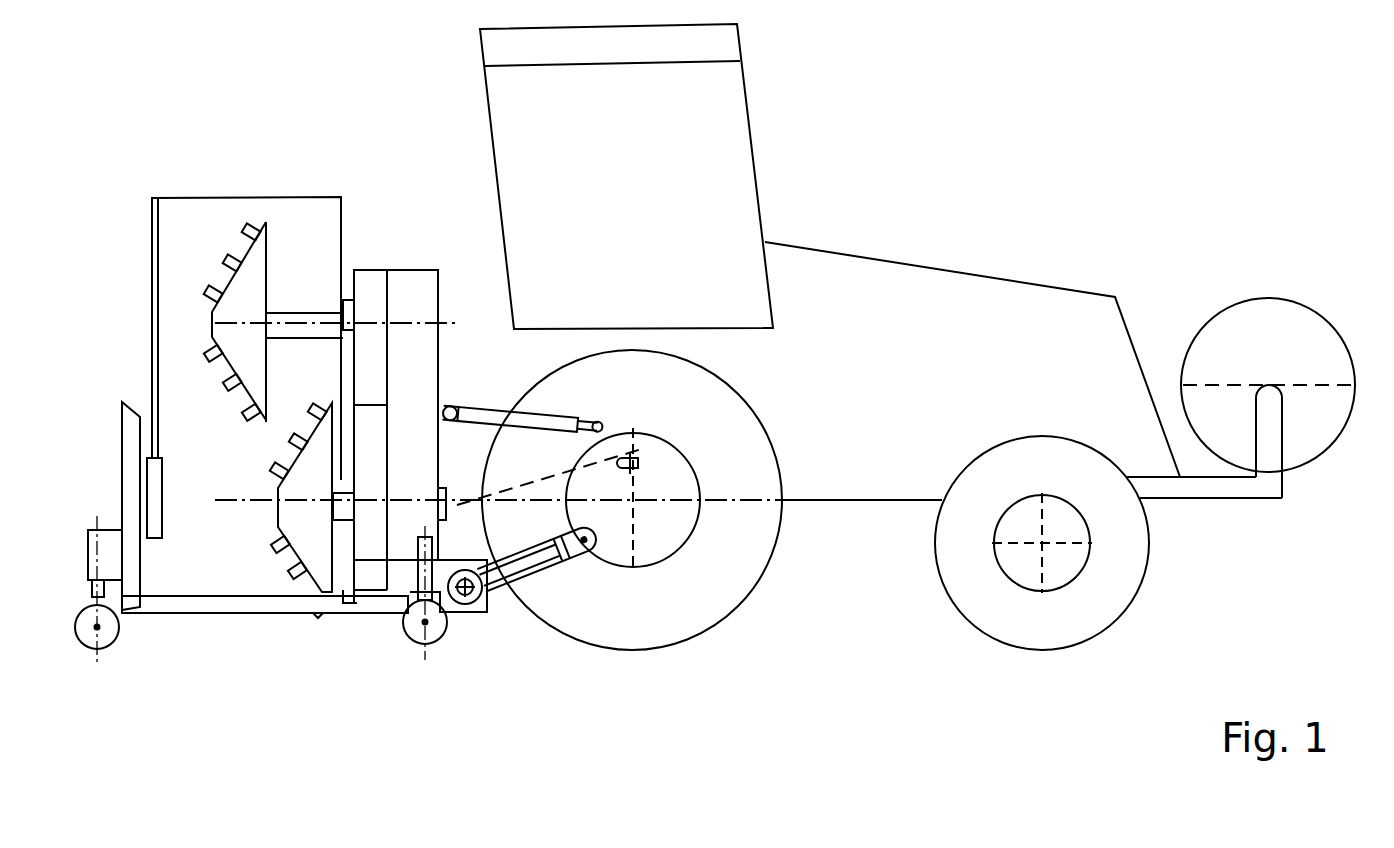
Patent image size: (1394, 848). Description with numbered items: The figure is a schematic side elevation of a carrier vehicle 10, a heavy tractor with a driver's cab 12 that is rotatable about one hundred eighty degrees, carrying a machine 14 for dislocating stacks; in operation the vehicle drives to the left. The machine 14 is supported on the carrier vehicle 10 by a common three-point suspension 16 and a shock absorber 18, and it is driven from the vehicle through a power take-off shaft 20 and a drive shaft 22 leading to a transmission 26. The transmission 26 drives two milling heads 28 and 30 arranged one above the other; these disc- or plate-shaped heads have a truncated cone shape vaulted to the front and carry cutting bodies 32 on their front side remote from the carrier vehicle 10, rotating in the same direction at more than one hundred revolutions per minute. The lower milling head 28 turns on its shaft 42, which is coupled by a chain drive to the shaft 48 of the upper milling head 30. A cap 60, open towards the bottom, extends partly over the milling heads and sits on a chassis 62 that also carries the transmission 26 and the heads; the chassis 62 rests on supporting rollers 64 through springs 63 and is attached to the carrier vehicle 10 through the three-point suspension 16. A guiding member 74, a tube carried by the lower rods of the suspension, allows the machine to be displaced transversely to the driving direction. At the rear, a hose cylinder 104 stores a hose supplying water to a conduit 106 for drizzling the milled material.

The carrier vehicle 10 is at (889, 247).
The cab 12 is at (752, 112).
The machine for dislocating stacks 14 is at (317, 186).
The three-point suspension 16 is at (514, 563).
The shock absorber 18 is at (499, 408).
The power take-off shaft 20 is at (640, 457).
The drive shaft 22 is at (531, 486).
The transmission 26 is at (428, 298).
The lower milling head 28 is at (292, 503).
The upper milling head 30 is at (258, 264).
The cutting bodies 32 is at (258, 222).
The shaft of the lower milling head 42 is at (378, 600).
The shaft of the upper milling head 48 is at (330, 316).
The cap 60 is at (198, 197).
The chassis 62 is at (261, 605).
The springs 63 is at (100, 565).
The supporting rollers 64 is at (112, 630).
The guiding member 74 is at (488, 598).
The hose cylinder 104 is at (1292, 328).
The conduit 106 is at (1272, 432).